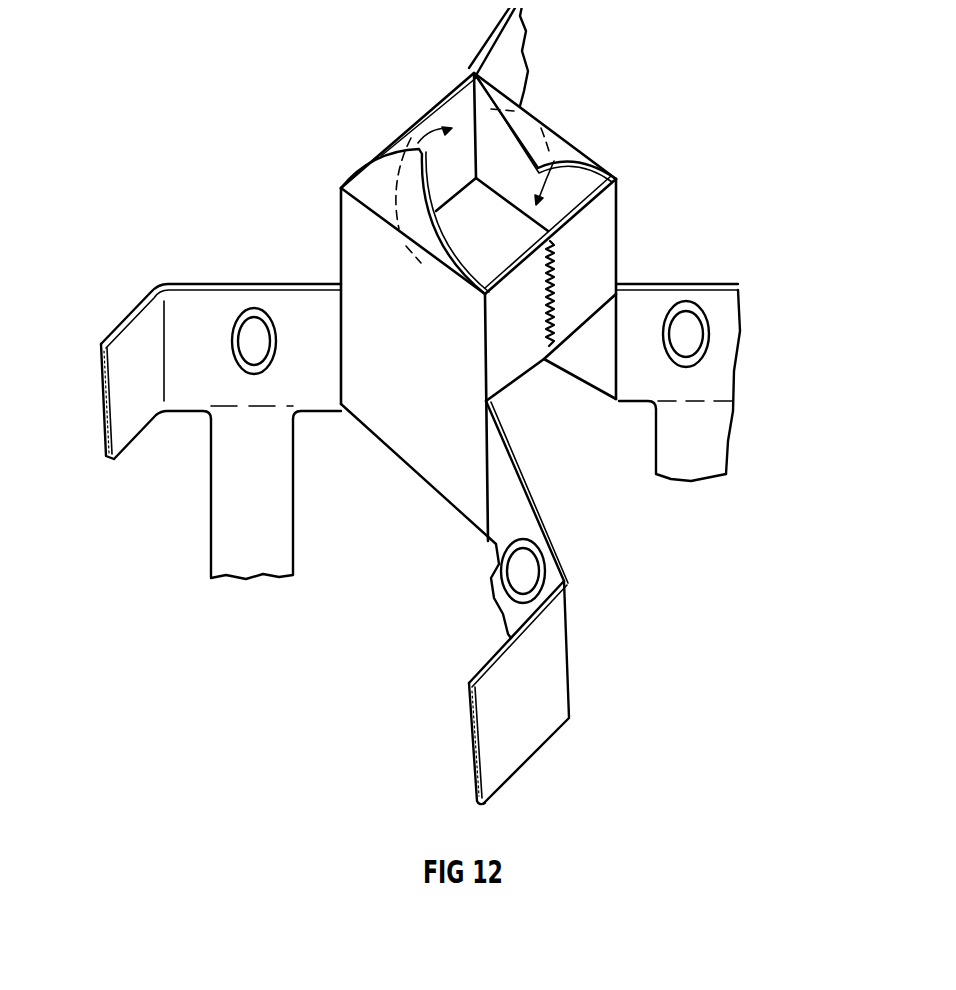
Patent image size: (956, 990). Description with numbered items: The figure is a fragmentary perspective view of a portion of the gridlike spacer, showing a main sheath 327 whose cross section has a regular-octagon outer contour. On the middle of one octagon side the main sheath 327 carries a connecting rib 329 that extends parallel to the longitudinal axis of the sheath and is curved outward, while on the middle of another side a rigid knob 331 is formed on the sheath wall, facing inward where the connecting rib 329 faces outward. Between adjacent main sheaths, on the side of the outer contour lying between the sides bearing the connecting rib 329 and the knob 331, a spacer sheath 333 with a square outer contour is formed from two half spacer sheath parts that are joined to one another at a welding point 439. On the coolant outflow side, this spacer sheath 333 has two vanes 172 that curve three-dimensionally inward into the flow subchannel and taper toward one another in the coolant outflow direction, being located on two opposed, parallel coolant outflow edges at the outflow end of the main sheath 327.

The vane 172 is at (383, 187).
The main sheath 327 is at (217, 302).
The connecting rib 329 is at (277, 523).
The rigid knob 331 is at (272, 348).
The spacer sheath 333 is at (603, 223).
The welding point 439 is at (413, 140).